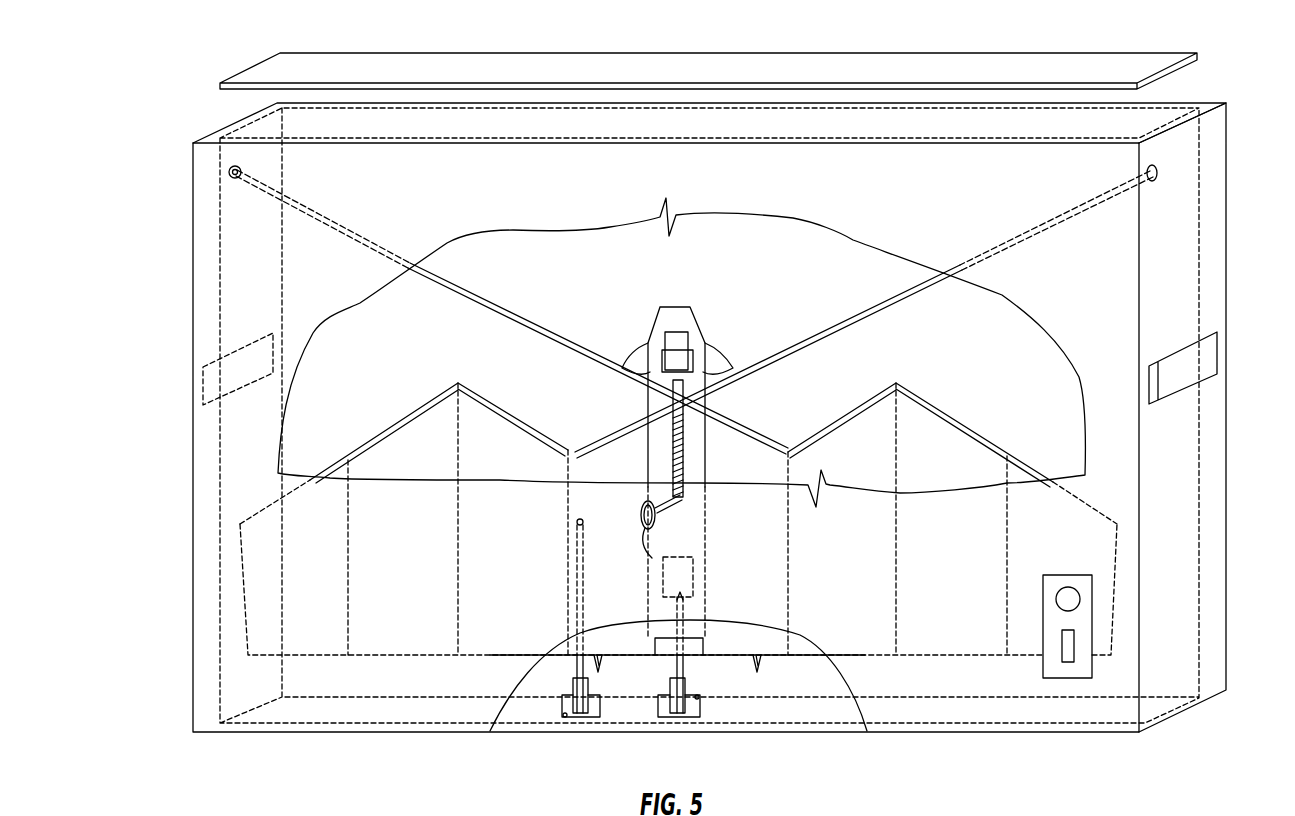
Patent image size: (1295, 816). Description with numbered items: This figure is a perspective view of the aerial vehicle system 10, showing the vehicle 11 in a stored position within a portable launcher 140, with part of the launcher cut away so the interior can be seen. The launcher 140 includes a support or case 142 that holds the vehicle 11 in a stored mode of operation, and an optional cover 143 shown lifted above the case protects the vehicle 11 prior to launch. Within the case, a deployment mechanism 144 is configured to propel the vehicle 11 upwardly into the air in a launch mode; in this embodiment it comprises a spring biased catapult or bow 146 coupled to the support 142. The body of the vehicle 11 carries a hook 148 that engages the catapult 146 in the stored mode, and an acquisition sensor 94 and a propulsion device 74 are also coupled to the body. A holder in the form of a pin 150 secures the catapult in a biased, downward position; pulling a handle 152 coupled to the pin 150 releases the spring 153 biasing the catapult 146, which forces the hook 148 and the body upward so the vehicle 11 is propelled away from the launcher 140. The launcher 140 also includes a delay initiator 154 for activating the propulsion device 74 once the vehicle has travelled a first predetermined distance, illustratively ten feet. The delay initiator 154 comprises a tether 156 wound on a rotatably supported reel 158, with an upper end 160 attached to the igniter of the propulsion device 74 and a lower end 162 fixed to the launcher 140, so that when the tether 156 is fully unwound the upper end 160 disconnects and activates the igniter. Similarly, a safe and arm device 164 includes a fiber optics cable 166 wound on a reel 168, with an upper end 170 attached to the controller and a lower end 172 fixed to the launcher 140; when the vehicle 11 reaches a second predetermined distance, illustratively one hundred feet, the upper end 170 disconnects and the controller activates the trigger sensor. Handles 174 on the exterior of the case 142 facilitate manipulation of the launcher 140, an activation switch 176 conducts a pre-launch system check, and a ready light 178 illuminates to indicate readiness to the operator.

The system 10 is at (711, 414).
The vehicle 11 is at (1025, 408).
The propulsion device 74 is at (695, 577).
The acquisition sensor 94 is at (683, 330).
The launcher 140 is at (1235, 172).
The case 142 is at (1208, 432).
The cover 143 is at (703, 67).
The deployment mechanism 144 is at (753, 361).
The catapult 146 is at (820, 345).
The hook 148 is at (685, 385).
The pin 150 is at (652, 560).
The handle 152 is at (641, 524).
The spring 153 is at (685, 468).
The delay initiator 154 is at (688, 613).
The tether 156 is at (685, 665).
The reel 158 is at (678, 692).
The upper end 160 is at (678, 596).
The lower end 162 is at (686, 684).
The safe and arm device 164 is at (560, 620).
The fiber optics cable 166 is at (566, 665).
The reel 168 is at (568, 716).
The upper end 170 is at (575, 522).
The lower end 172 is at (572, 682).
The handles 174 is at (200, 386).
The activation switch 176 is at (1076, 645).
The ready light 178 is at (1075, 598).